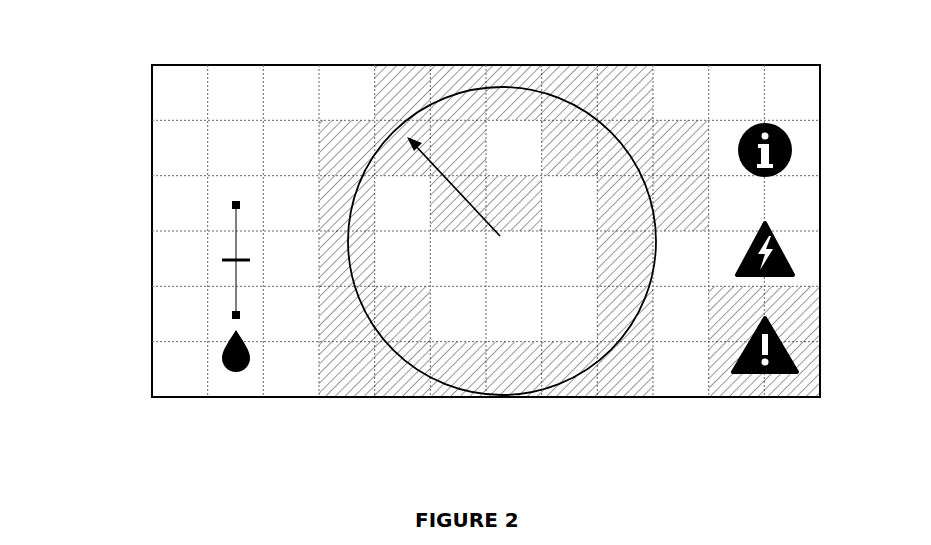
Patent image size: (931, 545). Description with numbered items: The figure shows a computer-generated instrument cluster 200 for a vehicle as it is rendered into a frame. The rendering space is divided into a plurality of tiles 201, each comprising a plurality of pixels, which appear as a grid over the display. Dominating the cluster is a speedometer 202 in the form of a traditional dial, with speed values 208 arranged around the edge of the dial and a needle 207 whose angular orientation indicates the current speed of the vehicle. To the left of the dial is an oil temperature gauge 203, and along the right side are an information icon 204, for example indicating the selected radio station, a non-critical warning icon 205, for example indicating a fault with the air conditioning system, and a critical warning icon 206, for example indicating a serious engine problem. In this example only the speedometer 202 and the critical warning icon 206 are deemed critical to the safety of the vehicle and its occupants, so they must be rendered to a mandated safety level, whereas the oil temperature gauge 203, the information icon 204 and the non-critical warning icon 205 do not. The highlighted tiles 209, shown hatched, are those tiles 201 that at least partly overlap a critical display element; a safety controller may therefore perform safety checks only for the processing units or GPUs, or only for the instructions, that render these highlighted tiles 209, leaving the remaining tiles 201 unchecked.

The instrument cluster 200 is at (117, 72).
The tiles 201 is at (486, 231).
The speedometer 202 is at (493, 397).
The oil temperature gauge 203 is at (237, 372).
The information icon 204 is at (792, 150).
The non-critical warning icon 205 is at (793, 268).
The critical warning icon 206 is at (793, 363).
The needle 207 is at (463, 178).
The speed values 208 is at (568, 65).
The highlighted tiles 209 is at (346, 373).